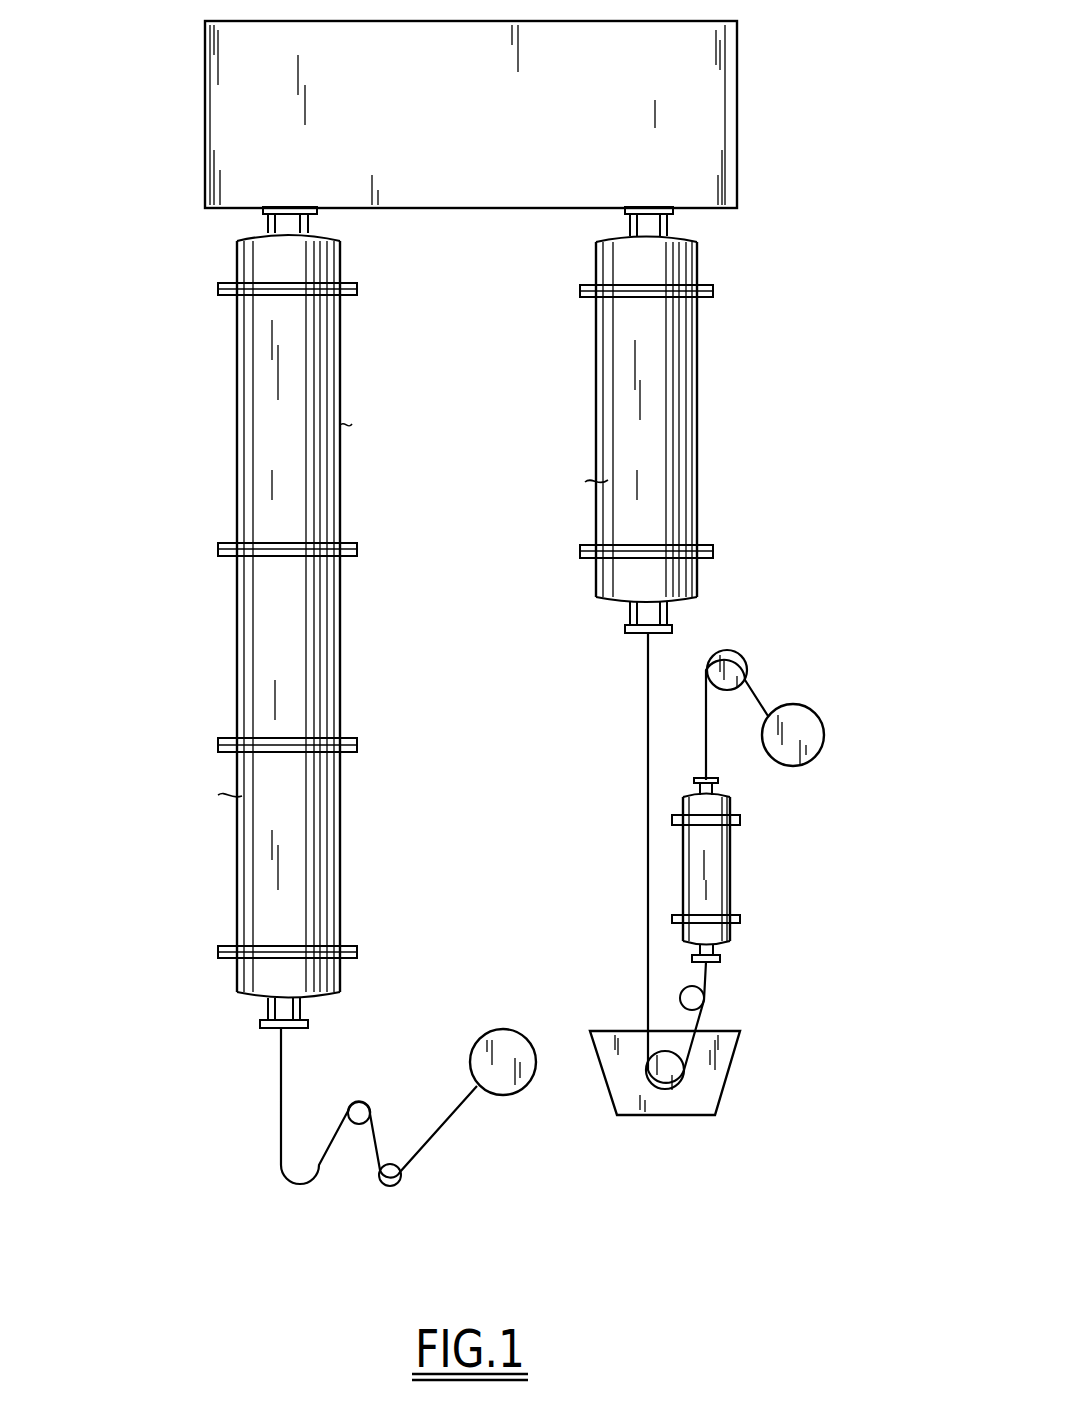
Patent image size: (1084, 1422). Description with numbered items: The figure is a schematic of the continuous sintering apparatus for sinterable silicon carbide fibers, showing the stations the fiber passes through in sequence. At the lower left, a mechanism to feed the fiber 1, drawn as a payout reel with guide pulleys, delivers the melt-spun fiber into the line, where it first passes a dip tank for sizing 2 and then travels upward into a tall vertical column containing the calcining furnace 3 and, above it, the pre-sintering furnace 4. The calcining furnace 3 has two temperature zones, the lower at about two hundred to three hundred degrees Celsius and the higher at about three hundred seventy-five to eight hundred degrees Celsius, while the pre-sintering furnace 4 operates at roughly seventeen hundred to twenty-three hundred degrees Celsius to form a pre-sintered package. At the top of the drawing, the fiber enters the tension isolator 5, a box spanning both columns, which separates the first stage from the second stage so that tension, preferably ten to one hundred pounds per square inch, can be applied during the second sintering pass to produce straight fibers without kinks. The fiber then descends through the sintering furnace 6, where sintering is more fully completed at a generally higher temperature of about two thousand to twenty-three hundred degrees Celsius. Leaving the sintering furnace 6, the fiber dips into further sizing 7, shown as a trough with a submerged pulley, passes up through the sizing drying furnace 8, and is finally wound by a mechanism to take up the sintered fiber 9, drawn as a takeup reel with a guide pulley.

The mechanism to feed the fiber 1 is at (462, 1101).
The dip tank for sizing 2 is at (280, 1062).
The calcining furnace 3 is at (243, 838).
The pre-sintering furnace 4 is at (332, 380).
The tension isolator 5 is at (737, 97).
The sintering furnace 6 is at (612, 517).
The further sizing 7 is at (720, 1102).
The sizing drying furnace 8 is at (733, 862).
The mechanism to take up the sintered fiber 9 is at (824, 735).